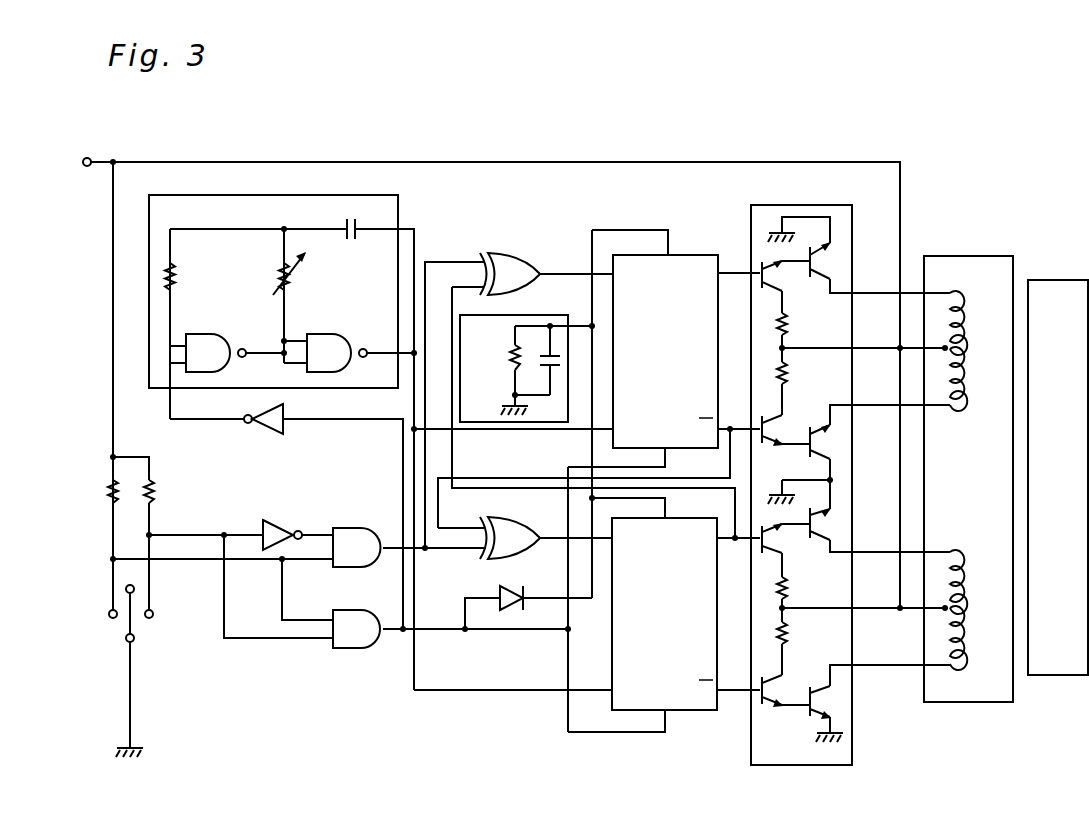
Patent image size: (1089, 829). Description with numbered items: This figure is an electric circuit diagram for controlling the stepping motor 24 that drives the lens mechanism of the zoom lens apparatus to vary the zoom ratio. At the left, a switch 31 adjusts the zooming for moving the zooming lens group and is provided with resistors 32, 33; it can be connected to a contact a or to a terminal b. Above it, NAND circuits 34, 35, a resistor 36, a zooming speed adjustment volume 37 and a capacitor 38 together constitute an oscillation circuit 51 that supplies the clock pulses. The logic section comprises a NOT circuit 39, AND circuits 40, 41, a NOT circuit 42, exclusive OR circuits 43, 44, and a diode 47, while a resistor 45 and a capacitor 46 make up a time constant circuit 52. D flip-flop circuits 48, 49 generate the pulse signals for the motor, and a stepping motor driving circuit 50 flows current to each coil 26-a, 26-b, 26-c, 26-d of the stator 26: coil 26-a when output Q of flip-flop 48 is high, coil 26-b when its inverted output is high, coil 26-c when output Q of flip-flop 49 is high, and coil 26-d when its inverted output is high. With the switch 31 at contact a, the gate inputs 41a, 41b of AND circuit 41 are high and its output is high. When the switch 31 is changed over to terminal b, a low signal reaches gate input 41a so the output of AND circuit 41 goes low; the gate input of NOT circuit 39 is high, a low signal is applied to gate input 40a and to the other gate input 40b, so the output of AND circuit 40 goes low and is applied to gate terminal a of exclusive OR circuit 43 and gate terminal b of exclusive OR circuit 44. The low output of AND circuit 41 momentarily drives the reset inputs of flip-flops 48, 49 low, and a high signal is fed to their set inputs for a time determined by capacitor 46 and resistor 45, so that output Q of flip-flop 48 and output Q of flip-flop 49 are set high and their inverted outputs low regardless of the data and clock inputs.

The motor 24 is at (1058, 280).
The stator 26 is at (968, 466).
The coil 26-a is at (968, 309).
The coil 26-b is at (948, 406).
The coil 26-c is at (946, 552).
The coil 26-d is at (945, 666).
The switch 31 is at (145, 628).
The resistor 32 is at (108, 485).
The resistor 33 is at (156, 494).
The NAND circuit 34 is at (214, 334).
The NAND circuit 35 is at (334, 334).
The resistor 36 is at (175, 276).
The zooming speed adjustment volume 37 is at (292, 276).
The capacitor 38 is at (357, 223).
The NOT circuit 39 is at (278, 516).
The AND circuit 40 is at (370, 527).
The gate input 40a is at (317, 522).
The gate input 40b is at (307, 575).
The AND circuit 41 is at (359, 645).
The gate input 41a is at (307, 612).
The gate input 41b is at (278, 654).
The NOT circuit 42 is at (266, 435).
The Exclusive OR circuit 43 is at (515, 258).
The Exclusive OR circuit 44 is at (505, 522).
The resistor 45 is at (512, 362).
The capacitor 46 is at (545, 356).
The diode 47 is at (512, 586).
The D flip-flop circuit 48 is at (693, 256).
The D flip-flop circuit 49 is at (692, 711).
The stepping motor driving circuit 50 is at (848, 206).
The oscillation circuit 51 is at (242, 200).
The time constant circuit 52 is at (526, 348).